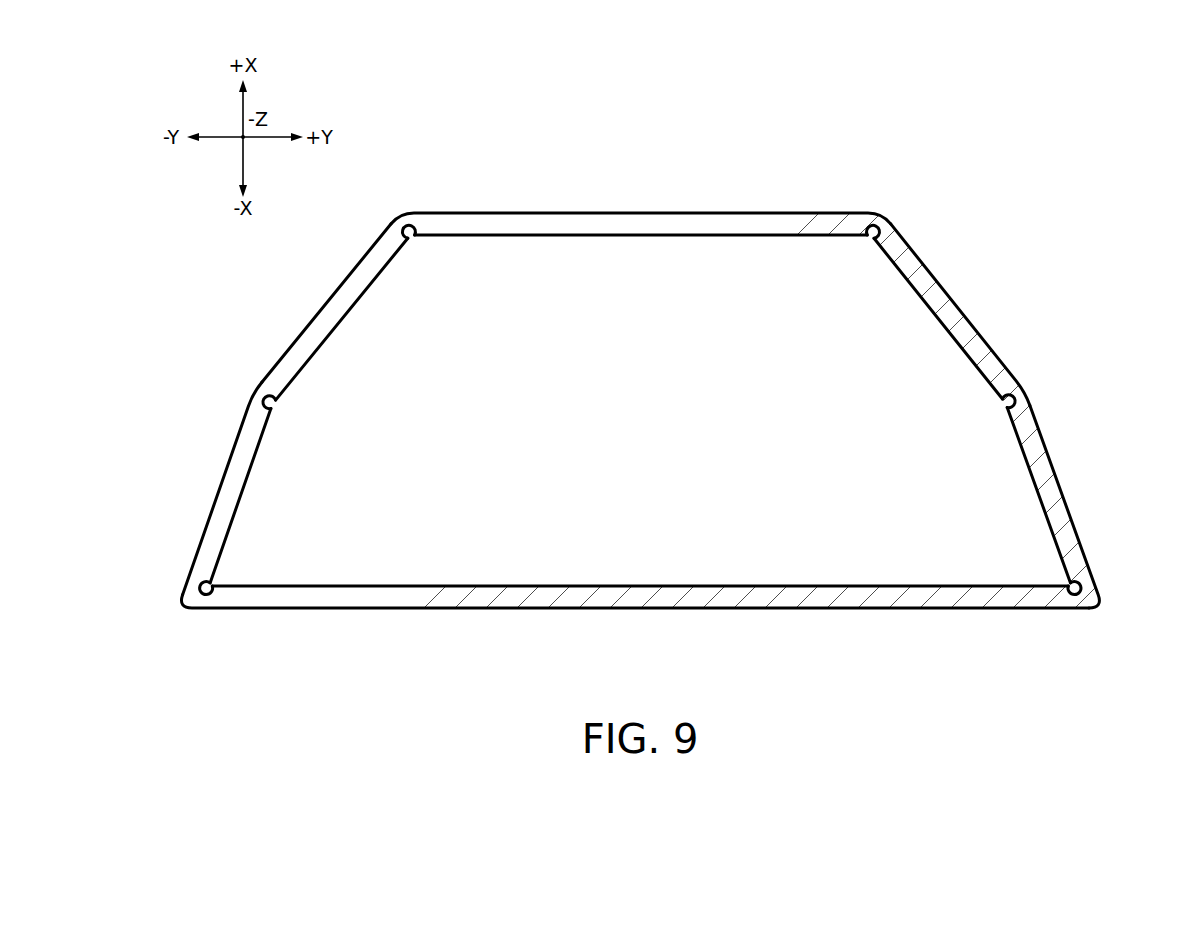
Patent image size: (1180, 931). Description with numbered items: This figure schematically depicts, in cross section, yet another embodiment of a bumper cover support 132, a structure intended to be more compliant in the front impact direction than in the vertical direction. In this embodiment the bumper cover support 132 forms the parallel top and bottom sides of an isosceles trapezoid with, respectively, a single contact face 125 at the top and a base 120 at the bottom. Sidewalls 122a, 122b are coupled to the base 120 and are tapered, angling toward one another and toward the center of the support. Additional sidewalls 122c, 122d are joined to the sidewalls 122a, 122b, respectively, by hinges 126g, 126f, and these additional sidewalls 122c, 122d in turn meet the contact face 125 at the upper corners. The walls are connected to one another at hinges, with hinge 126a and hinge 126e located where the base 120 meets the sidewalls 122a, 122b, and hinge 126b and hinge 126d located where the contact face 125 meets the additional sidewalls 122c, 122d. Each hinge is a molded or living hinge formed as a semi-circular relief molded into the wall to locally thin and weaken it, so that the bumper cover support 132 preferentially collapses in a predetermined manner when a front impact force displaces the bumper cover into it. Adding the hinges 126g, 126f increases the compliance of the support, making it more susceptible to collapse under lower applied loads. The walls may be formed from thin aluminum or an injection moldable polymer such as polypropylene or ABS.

The bumper cover support 132 is at (897, 180).
The base 120 is at (418, 610).
The contact face 125 is at (597, 212).
The sidewall 122a is at (222, 482).
The sidewall 122b is at (1056, 478).
The additional sidewall 122c is at (313, 315).
The additional sidewall 122d is at (968, 318).
The hinge 126a is at (211, 585).
The hinge 126b is at (410, 241).
The hinge 126d is at (872, 241).
The hinge 126e is at (1068, 585).
The hinge 126f is at (1003, 403).
The hinge 126g is at (278, 405).